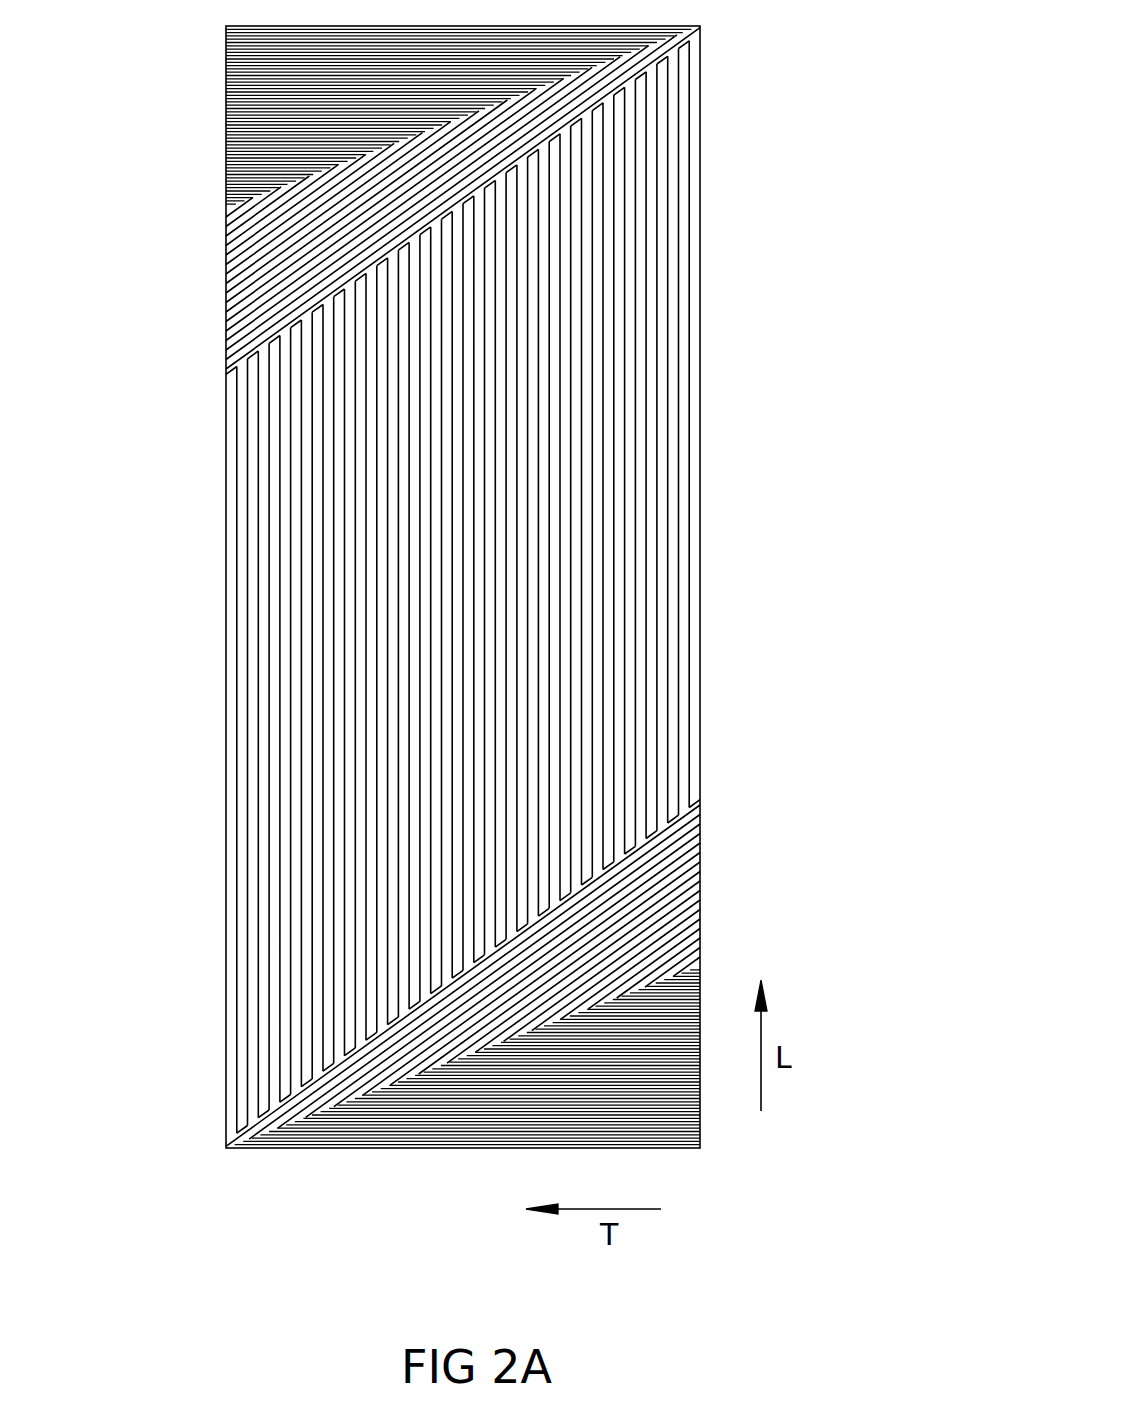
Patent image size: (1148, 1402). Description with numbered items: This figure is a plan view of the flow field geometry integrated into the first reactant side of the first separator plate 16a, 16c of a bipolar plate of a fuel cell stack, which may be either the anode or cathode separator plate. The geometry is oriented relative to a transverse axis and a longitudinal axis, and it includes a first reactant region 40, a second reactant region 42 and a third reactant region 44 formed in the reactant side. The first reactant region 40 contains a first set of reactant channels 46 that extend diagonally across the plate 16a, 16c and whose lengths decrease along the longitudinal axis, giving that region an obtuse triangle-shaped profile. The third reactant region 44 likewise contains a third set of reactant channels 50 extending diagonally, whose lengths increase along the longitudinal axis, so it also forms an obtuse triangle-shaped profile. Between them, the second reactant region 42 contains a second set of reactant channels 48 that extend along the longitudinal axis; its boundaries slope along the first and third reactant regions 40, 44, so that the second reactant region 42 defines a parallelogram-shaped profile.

The anode separator plate 16a is at (506, 587).
The cathode separator plate 16c is at (506, 587).
The first reactant region 40 is at (640, 880).
The second reactant region 42 is at (642, 563).
The third reactant region 44 is at (217, 278).
The first set of reactant channels 46 is at (640, 947).
The second set of reactant channels 48 is at (640, 225).
The third set of reactant channels 50 is at (217, 240).